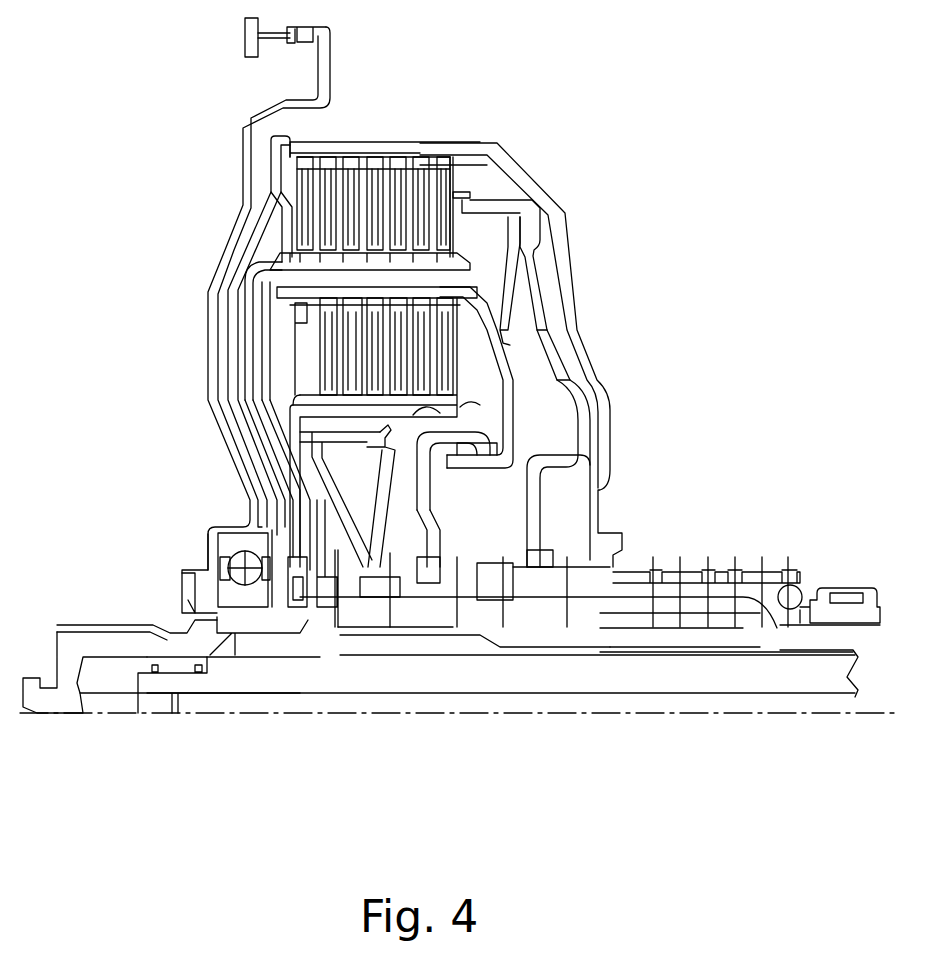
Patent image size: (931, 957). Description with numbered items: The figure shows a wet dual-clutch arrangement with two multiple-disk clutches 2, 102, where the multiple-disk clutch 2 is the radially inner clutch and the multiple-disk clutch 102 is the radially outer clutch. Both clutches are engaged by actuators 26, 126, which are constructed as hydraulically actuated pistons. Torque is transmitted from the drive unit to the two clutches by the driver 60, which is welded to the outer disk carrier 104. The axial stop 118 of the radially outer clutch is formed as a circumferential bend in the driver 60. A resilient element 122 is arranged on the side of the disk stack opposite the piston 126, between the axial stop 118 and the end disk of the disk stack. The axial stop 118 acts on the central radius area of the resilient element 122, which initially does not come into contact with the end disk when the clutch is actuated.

The multiple-disk clutch 2 is at (512, 337).
The actuator 26 is at (502, 403).
The driver 60 is at (238, 268).
The multiple-disk clutch 102 is at (478, 186).
The outer disk carrier 104 is at (487, 147).
The axial stop 118 is at (283, 210).
The resilient element 122 is at (295, 145).
The actuator 126 is at (535, 250).